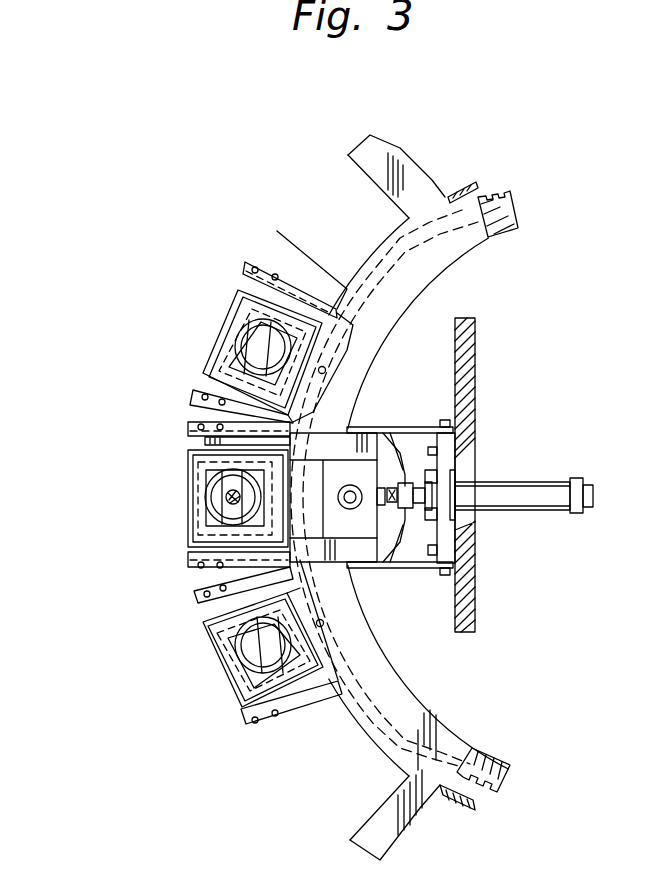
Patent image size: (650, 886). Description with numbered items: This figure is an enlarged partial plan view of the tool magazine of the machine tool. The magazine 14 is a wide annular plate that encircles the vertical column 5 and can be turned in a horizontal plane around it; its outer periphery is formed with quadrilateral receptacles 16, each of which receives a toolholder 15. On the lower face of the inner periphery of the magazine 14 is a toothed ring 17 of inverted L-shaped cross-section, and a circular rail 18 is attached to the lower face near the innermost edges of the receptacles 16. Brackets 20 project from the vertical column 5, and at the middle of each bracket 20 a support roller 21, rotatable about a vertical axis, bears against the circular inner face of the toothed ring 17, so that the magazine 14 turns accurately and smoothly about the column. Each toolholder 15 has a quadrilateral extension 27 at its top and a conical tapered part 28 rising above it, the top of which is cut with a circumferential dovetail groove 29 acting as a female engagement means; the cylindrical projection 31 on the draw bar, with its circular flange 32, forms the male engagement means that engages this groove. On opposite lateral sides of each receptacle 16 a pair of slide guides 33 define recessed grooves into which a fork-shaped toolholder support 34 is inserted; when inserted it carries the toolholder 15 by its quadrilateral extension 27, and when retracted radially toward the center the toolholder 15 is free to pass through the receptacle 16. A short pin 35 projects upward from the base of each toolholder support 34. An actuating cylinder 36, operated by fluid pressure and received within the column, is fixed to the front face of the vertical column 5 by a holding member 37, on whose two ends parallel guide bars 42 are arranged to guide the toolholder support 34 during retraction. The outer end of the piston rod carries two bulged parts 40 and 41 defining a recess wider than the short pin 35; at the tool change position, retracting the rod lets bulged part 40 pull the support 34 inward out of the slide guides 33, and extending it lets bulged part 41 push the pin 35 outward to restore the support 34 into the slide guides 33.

The vertical column 5 is at (477, 328).
The magazine 14 is at (423, 283).
The toolholder 15 is at (232, 290).
The quadrilateral receptacle 16 is at (362, 231).
The toothed ring 17 is at (493, 192).
The circular rail 18 is at (465, 180).
The bracket 20 is at (357, 543).
The support roller 21 is at (330, 585).
The quadrilateral extension 27 is at (227, 313).
The conical tapered part 28 is at (250, 332).
The dovetail groove 29 is at (243, 343).
The cylindrical projection 31 is at (210, 503).
The circular flange 32 is at (222, 470).
The slide guide 33 is at (245, 262).
The toolholder support 34 is at (340, 333).
The short pin 35 is at (326, 371).
The actuating cylinder 36 is at (557, 488).
The holding member 37 is at (453, 452).
The bulged part 40 is at (333, 496).
The bulged part 41 is at (390, 427).
The guide bar 42 is at (430, 427).